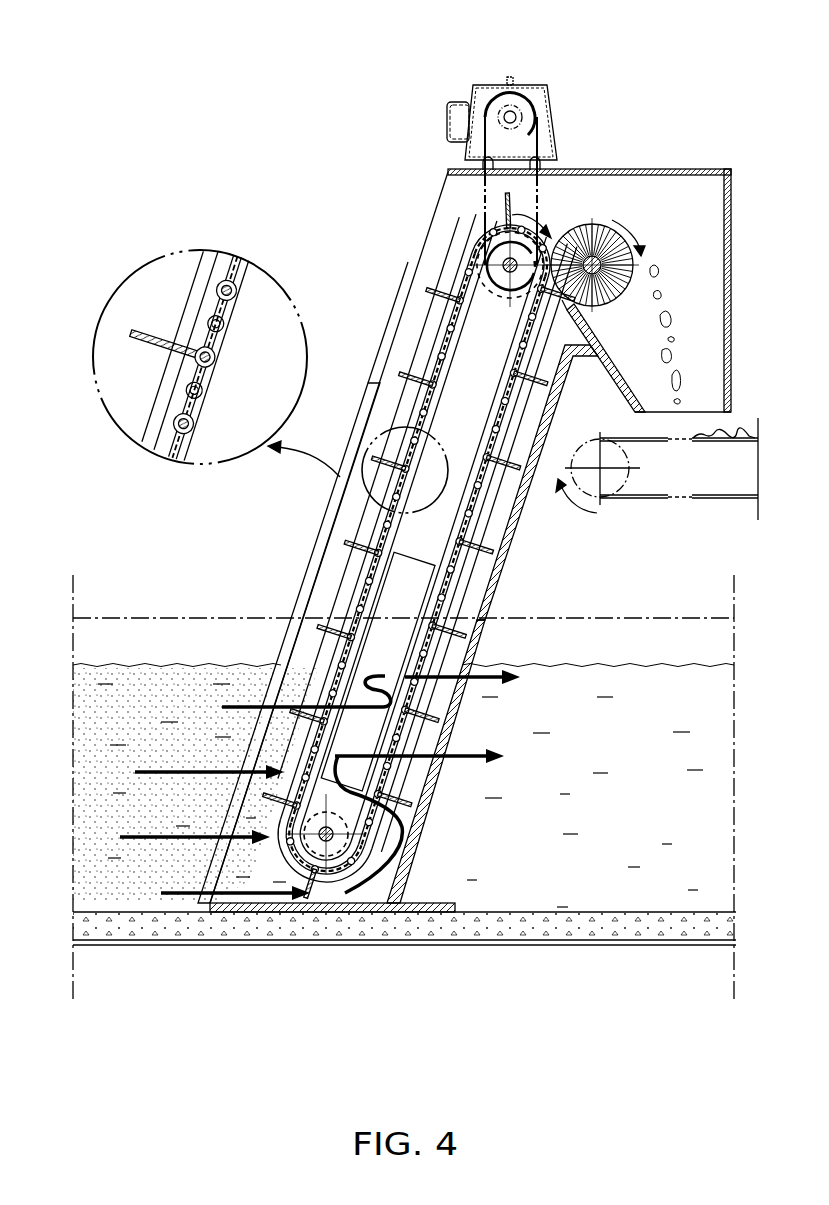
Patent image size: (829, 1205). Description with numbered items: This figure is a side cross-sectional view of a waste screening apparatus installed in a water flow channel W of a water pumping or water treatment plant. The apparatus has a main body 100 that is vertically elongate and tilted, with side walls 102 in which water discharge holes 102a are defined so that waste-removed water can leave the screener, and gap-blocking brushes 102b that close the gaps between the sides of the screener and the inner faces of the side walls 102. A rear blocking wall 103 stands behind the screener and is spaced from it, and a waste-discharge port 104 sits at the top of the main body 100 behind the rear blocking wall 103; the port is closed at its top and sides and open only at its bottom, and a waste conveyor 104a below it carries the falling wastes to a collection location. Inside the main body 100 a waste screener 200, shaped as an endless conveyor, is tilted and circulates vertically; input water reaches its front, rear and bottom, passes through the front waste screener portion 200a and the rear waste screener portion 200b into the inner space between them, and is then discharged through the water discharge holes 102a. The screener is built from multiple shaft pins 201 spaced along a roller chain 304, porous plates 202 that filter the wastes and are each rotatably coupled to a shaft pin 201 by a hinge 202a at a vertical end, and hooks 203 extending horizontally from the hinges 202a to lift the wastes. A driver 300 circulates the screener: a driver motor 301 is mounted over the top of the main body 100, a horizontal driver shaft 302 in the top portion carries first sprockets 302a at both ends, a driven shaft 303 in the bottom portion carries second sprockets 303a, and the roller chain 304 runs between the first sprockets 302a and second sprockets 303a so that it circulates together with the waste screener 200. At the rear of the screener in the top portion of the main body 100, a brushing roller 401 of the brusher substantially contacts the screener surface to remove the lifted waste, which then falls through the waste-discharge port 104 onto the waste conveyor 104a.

The main body 100 is at (420, 210).
The side walls 102 is at (497, 527).
The water discharge holes 102a is at (440, 612).
The gap-blocking brushes 102b is at (320, 648).
The rear blocking wall 103 is at (413, 857).
The waste-discharge port 104 is at (685, 415).
The waste conveyor 104a is at (625, 473).
The waste screener 200 is at (353, 550).
The front waste screener portion 200a is at (378, 516).
The rear waste screener portion 200b is at (453, 560).
The shaft pins 201 is at (240, 282).
The porous plates 202 is at (203, 312).
The hinge 202a is at (220, 288).
The hooks 203 is at (152, 335).
The driver 300 is at (411, 509).
The driver motor 301 is at (483, 98).
The driver shaft 302 is at (503, 263).
The first sprockets 302a is at (478, 300).
The driven shaft 303 is at (326, 845).
The second sprockets 303a is at (345, 822).
The roller chain 304 is at (220, 343).
The brushing roller 401 is at (583, 223).
The water flow channel W is at (528, 930).